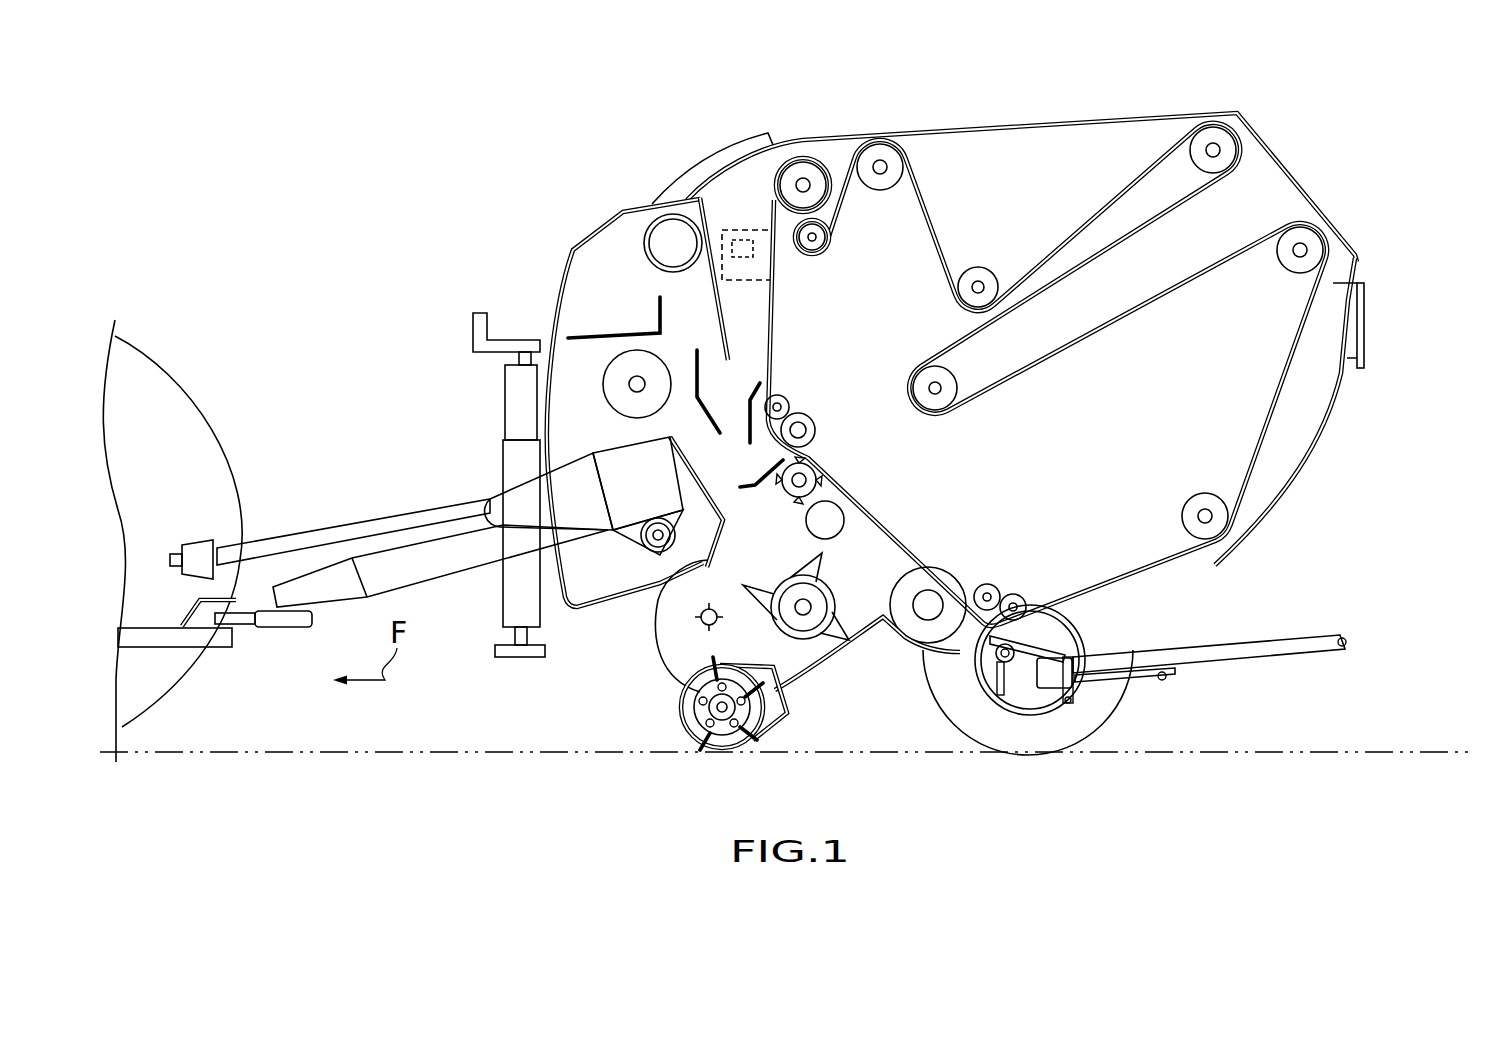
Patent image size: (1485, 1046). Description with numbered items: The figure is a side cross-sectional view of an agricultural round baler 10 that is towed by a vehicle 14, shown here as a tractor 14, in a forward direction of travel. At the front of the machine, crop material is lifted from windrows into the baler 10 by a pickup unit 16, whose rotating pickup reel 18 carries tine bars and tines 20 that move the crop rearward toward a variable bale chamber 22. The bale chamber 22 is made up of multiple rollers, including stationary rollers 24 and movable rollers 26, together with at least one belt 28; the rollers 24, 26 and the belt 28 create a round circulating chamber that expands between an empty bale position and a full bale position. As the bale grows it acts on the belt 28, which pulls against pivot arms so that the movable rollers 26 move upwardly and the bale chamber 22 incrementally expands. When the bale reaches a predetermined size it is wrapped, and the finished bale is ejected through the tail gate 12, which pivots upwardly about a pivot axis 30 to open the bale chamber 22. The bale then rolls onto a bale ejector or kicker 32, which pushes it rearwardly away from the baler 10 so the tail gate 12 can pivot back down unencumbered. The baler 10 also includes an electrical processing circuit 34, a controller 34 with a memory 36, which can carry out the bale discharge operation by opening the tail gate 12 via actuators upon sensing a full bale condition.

The round baler 10 is at (592, 190).
The tail gate 12 is at (1386, 333).
The vehicle 14 is at (200, 398).
The pickup unit 16 is at (678, 755).
The pickup reel 18 is at (785, 738).
The tines 20 is at (690, 703).
The variable bale chamber 22 is at (1066, 474).
The stationary rollers 24 is at (878, 144).
The movable rollers 26 is at (925, 368).
The belt 28 is at (858, 492).
The pivot axis 30 is at (758, 175).
The bale ejector 32 is at (1262, 652).
The electrical processing circuit 34 is at (745, 282).
The memory 36 is at (752, 250).